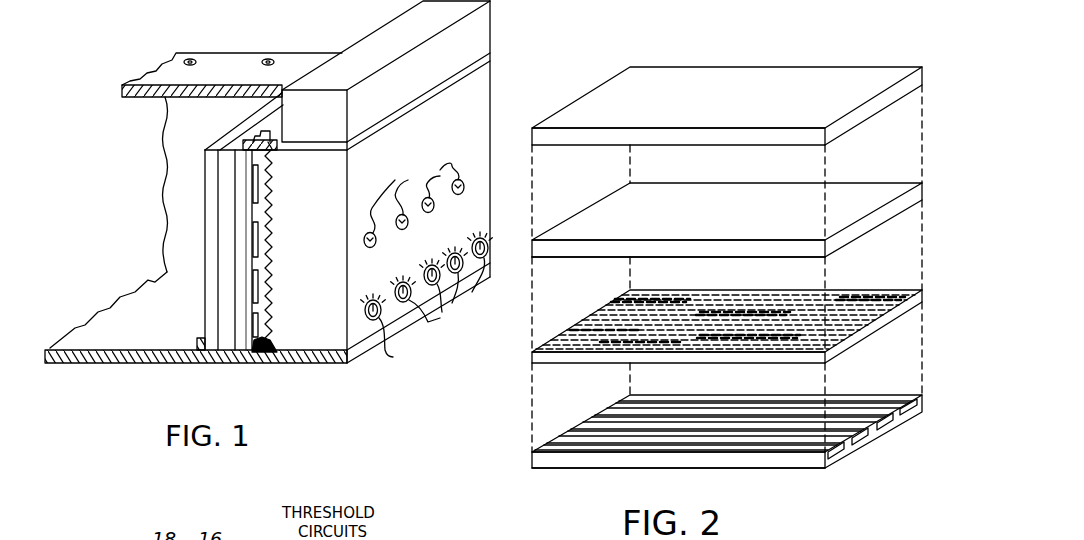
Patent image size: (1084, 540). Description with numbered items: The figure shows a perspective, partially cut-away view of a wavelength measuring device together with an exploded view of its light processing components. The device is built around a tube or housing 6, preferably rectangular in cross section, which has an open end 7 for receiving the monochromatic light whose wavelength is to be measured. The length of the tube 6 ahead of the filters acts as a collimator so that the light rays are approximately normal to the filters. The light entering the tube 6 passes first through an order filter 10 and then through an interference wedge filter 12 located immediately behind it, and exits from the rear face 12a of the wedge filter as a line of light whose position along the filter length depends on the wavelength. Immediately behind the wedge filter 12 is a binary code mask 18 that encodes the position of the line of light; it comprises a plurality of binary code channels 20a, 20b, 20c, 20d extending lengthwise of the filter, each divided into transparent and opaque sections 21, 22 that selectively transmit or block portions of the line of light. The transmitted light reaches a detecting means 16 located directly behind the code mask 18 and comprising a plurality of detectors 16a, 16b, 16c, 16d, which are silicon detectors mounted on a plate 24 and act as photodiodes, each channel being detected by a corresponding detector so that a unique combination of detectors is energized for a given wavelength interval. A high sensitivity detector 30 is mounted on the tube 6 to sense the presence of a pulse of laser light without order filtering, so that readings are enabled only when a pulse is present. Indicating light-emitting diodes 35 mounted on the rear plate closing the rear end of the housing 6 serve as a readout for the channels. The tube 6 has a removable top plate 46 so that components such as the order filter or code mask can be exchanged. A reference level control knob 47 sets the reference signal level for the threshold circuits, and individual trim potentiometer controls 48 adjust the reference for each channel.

In FIG. 1, the tube or housing 6 is at (106, 369).
In FIG. 1, the open end 7 is at (163, 187).
In FIG. 1, the order filter 10 is at (210, 220).
In FIG. 2, the order filter 10 is at (898, 44).
In FIG. 1, the interference wedge filter 12 is at (223, 243).
In FIG. 2, the interference wedge filter 12 is at (790, 170).
In FIG. 1, the rear face 12a is at (240, 300).
In FIG. 2, the rear face 12a is at (559, 259).
In FIG. 1, the detecting means 16 is at (262, 352).
In FIG. 2, the detecting means 16 is at (532, 458).
In FIG. 1, the detector 16a is at (272, 178).
In FIG. 2, the detector 16a is at (890, 404).
In FIG. 1, the detector 16b is at (270, 230).
In FIG. 2, the detector 16b is at (866, 420).
In FIG. 1, the detector 16c is at (260, 281).
In FIG. 2, the detector 16c is at (845, 440).
In FIG. 1, the detector 16d is at (260, 321).
In FIG. 2, the detector 16d is at (812, 447).
In FIG. 1, the code mask 18 is at (242, 262).
In FIG. 2, the code mask 18 is at (703, 336).
In FIG. 2, the binary code channel 20a is at (703, 302).
In FIG. 2, the binary code channel 20b is at (688, 276).
In FIG. 2, the binary code channel 20c is at (882, 278).
In FIG. 2, the binary code channel 20d is at (733, 346).
In FIG. 2, the transparent section 21 is at (587, 340).
In FIG. 2, the opaque section 22 is at (647, 345).
In FIG. 2, the plate 24 is at (605, 463).
In FIG. 1, the high sensitivity detector 30 is at (478, 33).
In FIG. 1, the light-emitting diode 35 is at (414, 203).
In FIG. 1, the removable top plate 46 is at (262, 60).
In FIG. 1, the reference level control knob 47 is at (389, 333).
In FIG. 1, the trim potentiometer controls 48 is at (442, 283).